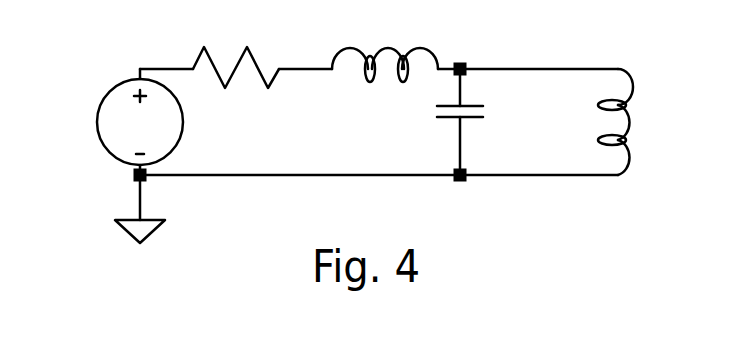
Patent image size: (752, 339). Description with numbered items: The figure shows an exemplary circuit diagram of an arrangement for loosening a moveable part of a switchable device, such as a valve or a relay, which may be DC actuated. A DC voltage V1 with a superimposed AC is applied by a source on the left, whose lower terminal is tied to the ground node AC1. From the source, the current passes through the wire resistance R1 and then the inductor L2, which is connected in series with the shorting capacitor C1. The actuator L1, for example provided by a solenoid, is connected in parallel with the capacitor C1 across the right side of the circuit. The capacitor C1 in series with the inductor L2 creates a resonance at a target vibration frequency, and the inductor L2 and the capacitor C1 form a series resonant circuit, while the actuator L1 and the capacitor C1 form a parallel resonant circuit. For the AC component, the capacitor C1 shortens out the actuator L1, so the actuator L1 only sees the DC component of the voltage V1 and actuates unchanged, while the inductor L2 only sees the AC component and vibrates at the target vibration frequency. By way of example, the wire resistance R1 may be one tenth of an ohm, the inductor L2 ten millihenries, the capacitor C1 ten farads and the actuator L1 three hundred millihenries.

The DC voltage with superimposed AC V1 is at (124, 122).
The wire resistance R1 is at (236, 55).
The inductor L2 is at (385, 52).
The shorting capacitor C1 is at (475, 122).
The actuator L1 is at (630, 122).
The ground AC1 is at (165, 212).